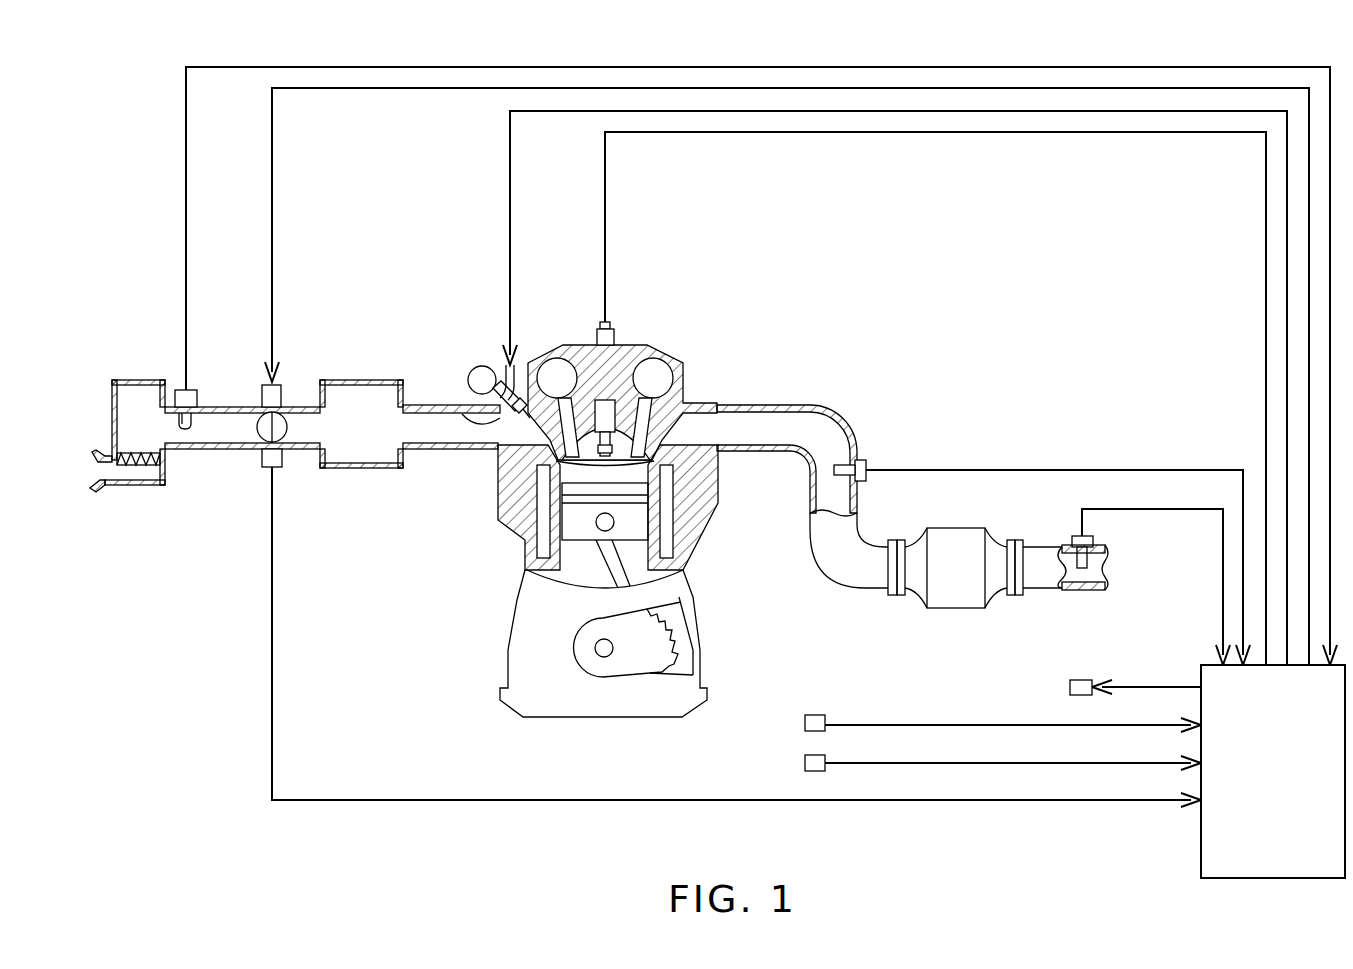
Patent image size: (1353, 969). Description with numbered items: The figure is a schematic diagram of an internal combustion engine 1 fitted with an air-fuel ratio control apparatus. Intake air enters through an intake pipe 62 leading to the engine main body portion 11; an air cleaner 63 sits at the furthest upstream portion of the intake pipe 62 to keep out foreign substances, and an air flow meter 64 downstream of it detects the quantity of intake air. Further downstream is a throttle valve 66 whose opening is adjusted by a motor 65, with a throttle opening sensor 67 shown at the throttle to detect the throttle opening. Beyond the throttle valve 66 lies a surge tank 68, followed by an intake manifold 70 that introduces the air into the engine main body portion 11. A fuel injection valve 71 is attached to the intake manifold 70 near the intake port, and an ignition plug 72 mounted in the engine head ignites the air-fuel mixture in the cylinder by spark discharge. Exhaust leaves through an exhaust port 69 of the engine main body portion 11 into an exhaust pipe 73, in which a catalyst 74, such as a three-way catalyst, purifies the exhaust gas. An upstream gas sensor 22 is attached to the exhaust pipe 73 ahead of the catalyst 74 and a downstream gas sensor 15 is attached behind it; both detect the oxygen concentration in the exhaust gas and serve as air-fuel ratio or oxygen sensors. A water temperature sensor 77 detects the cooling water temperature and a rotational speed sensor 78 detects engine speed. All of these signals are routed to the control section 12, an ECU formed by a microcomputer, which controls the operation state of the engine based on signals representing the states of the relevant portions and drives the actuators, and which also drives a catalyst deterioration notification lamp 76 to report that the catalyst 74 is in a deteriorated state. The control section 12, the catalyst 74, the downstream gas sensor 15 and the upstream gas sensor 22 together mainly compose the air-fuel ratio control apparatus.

The internal combustion engine 1 is at (848, 238).
The engine main body portion 11 is at (630, 338).
The control section (ECU) 12 is at (1201, 835).
The downstream gas sensor 15 is at (712, 381).
The upstream gas sensor 22 is at (868, 462).
The intake pipe 62 is at (225, 405).
The air cleaner 63 is at (128, 467).
The air flow meter 64 is at (181, 390).
The motor 65 is at (281, 388).
The throttle valve 66 is at (264, 433).
The throttle opening sensor 67 is at (279, 468).
The surge tank 68 is at (358, 380).
The exhaust port 69 is at (720, 428).
The intake manifold 70 is at (424, 404).
The fuel injection valve 71 is at (478, 380).
The ignition plug 72 is at (597, 335).
The exhaust pipe 73 is at (840, 414).
The catalyst 74 is at (962, 608).
The catalyst deterioration notification lamp 76 is at (1082, 680).
The water temperature sensor 77 is at (805, 723).
The rotational speed sensor 78 is at (805, 763).